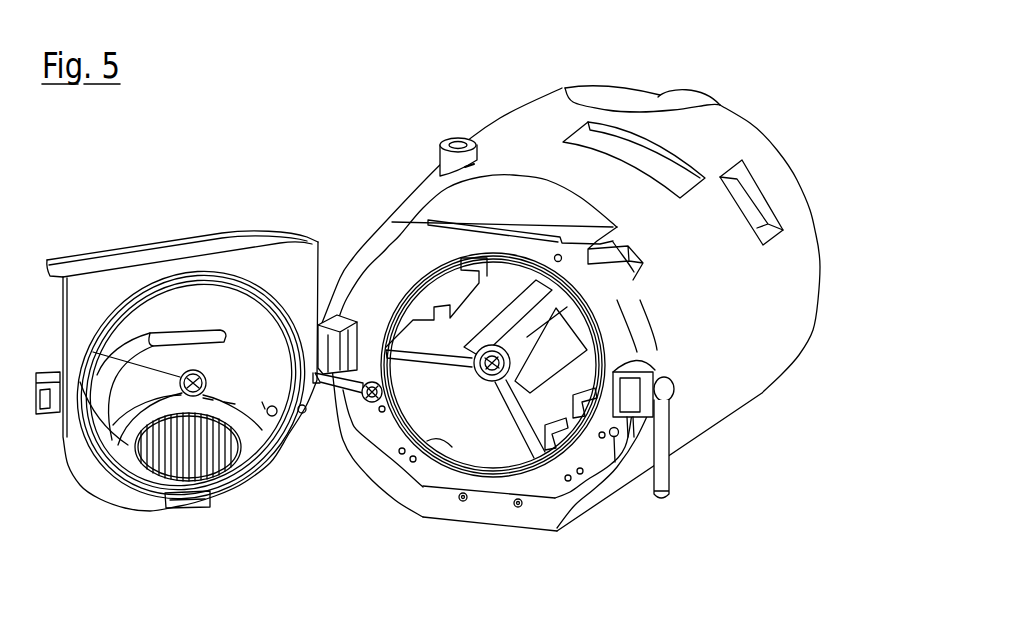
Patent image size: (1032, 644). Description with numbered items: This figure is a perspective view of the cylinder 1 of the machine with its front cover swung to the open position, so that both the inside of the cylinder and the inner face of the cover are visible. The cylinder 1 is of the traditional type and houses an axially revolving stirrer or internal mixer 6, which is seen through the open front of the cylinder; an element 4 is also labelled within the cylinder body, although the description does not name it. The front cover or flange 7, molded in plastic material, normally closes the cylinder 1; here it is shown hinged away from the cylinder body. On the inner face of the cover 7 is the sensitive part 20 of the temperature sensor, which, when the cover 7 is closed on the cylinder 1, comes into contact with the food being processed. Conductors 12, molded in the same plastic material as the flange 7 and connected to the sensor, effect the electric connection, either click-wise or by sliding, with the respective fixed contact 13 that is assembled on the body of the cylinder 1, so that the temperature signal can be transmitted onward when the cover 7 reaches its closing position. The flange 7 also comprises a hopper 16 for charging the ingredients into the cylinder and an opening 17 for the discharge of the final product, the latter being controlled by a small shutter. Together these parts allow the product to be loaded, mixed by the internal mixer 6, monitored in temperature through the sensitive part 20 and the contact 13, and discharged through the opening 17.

The cylinder 1 is at (571, 307).
The drum back wall 4 is at (431, 440).
The internal mixer 6 is at (492, 384).
The front cover 7 is at (190, 355).
The conductors 12 is at (301, 413).
The fixed contact 13 is at (368, 398).
The hopper 16 is at (157, 254).
The opening 17 is at (185, 443).
The sensitive part 20 is at (269, 417).